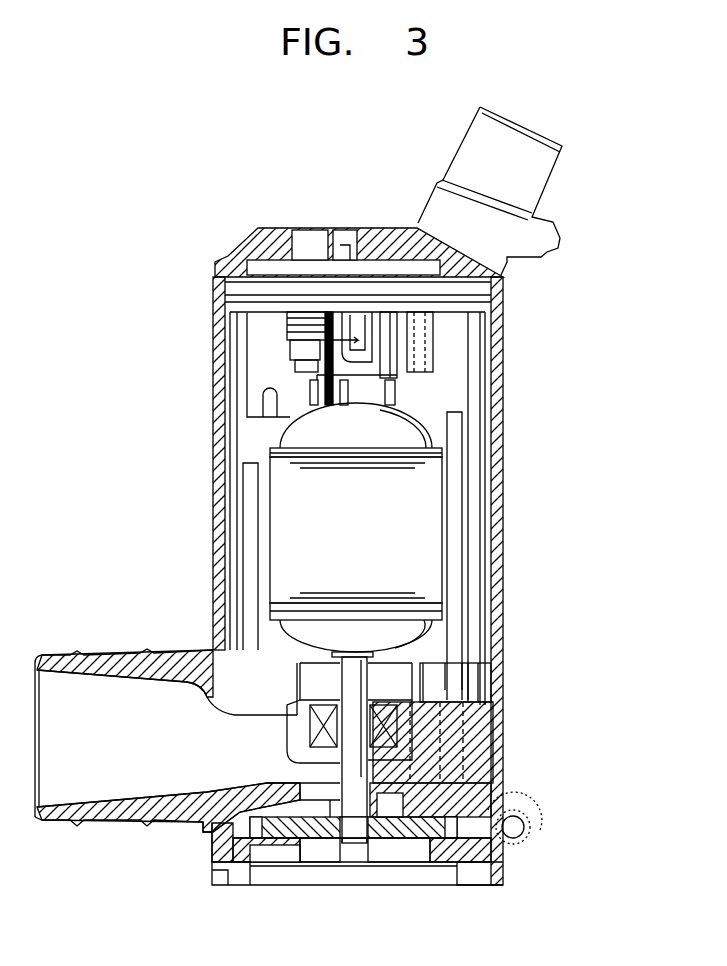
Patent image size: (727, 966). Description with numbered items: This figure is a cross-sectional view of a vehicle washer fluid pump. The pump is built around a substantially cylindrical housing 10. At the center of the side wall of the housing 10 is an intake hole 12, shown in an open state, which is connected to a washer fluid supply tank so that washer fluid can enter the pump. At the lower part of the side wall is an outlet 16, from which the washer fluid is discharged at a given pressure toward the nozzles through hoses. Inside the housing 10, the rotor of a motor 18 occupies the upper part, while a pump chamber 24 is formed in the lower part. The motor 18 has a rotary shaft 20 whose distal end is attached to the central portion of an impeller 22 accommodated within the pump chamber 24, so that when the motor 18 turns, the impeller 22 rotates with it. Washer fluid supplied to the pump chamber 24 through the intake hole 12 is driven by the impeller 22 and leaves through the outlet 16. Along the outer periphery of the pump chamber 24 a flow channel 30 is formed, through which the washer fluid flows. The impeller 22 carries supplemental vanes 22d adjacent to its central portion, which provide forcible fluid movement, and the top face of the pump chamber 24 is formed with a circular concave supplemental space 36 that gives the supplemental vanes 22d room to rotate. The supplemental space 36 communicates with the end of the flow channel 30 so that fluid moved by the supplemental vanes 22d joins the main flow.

The housing 10 is at (503, 368).
The intake hole 12 is at (70, 683).
The outlet 16 is at (545, 836).
The motor 18 is at (423, 508).
The rotary shaft 20 is at (407, 675).
The impeller 22 is at (463, 790).
The supplemental vanes 22d is at (323, 810).
The pump chamber 24 is at (477, 737).
The flow channel 30 is at (223, 887).
The supplemental space 36 is at (300, 843).